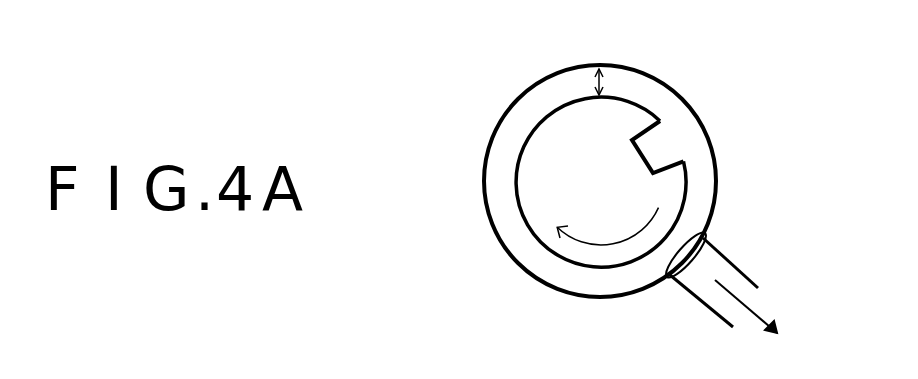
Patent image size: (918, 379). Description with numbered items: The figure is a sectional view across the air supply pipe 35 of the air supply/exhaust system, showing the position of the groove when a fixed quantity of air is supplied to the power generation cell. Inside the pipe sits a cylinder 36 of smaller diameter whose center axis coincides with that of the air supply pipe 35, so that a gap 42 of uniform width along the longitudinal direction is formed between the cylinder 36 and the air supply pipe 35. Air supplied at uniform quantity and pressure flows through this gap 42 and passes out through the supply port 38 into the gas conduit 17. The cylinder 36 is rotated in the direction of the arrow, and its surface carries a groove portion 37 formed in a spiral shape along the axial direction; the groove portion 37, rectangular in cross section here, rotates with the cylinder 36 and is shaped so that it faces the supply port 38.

The air supply pipe 35 is at (483, 184).
The cylinder 36 is at (560, 125).
The groove portion 37 is at (645, 157).
The gap 42 is at (603, 80).
The supply port 38 is at (706, 246).
The gas conduit 17 is at (753, 287).